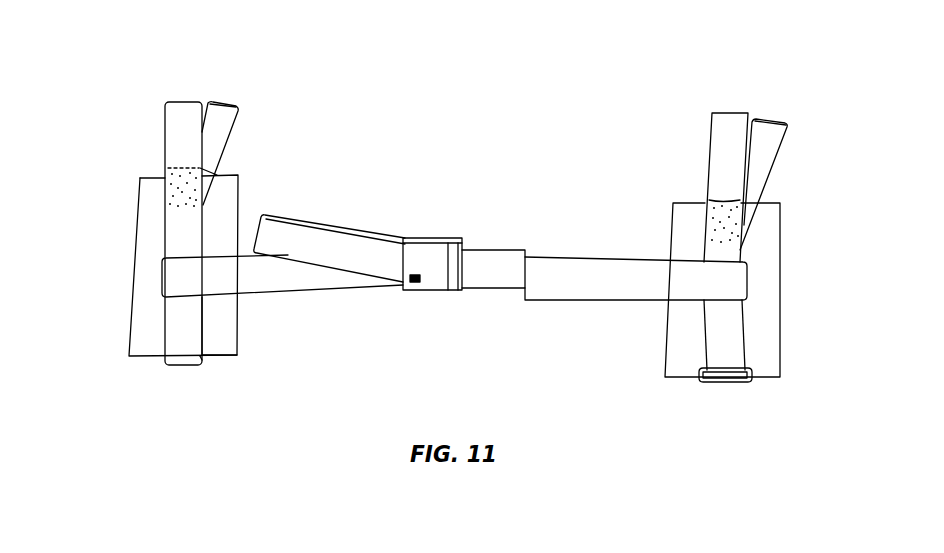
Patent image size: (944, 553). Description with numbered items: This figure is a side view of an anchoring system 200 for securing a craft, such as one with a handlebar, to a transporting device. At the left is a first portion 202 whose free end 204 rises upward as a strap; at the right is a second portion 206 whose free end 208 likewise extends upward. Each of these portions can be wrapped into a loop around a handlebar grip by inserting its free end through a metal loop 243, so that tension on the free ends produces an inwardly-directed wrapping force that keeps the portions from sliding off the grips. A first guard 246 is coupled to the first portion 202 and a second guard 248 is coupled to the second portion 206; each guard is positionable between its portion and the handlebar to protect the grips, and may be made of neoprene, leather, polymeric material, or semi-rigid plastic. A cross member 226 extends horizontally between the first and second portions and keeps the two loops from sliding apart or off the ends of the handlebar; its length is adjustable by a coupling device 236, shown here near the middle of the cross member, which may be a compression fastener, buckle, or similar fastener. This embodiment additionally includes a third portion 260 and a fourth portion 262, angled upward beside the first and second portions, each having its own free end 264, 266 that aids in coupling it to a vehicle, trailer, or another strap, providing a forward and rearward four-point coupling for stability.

The anchoring system 200 is at (122, 38).
The first portion 202 is at (170, 222).
The free end 204 is at (172, 106).
The second portion 206 is at (728, 332).
The free end 208 is at (728, 117).
The cross member 226 is at (545, 258).
The coupling device 236 is at (433, 252).
The metal loop 243 is at (202, 358).
The first guard 246 is at (230, 332).
The second guard 248 is at (770, 355).
The third portion 260 is at (226, 133).
The fourth portion 262 is at (772, 148).
The free end 264 is at (227, 106).
The free end 266 is at (772, 120).